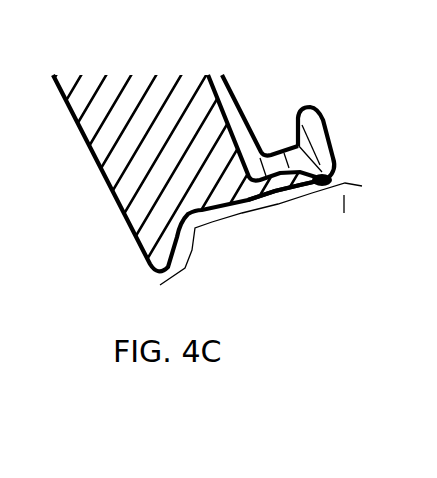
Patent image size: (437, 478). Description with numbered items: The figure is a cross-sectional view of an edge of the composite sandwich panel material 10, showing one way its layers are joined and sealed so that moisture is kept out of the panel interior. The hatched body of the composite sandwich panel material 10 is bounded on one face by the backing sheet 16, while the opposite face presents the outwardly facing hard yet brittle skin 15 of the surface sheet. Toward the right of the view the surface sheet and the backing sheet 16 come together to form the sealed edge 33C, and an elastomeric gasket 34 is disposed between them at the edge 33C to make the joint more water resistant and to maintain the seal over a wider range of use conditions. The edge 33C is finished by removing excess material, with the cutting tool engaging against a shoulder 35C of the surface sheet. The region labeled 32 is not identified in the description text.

The composite sandwich panel material 10 is at (253, 229).
The skin 15 is at (242, 114).
The backing sheet 16 is at (98, 166).
The edge portion 32 is at (344, 195).
The edge 33C is at (330, 185).
The elastomeric gasket 34 is at (329, 172).
The shoulder 35C is at (334, 177).